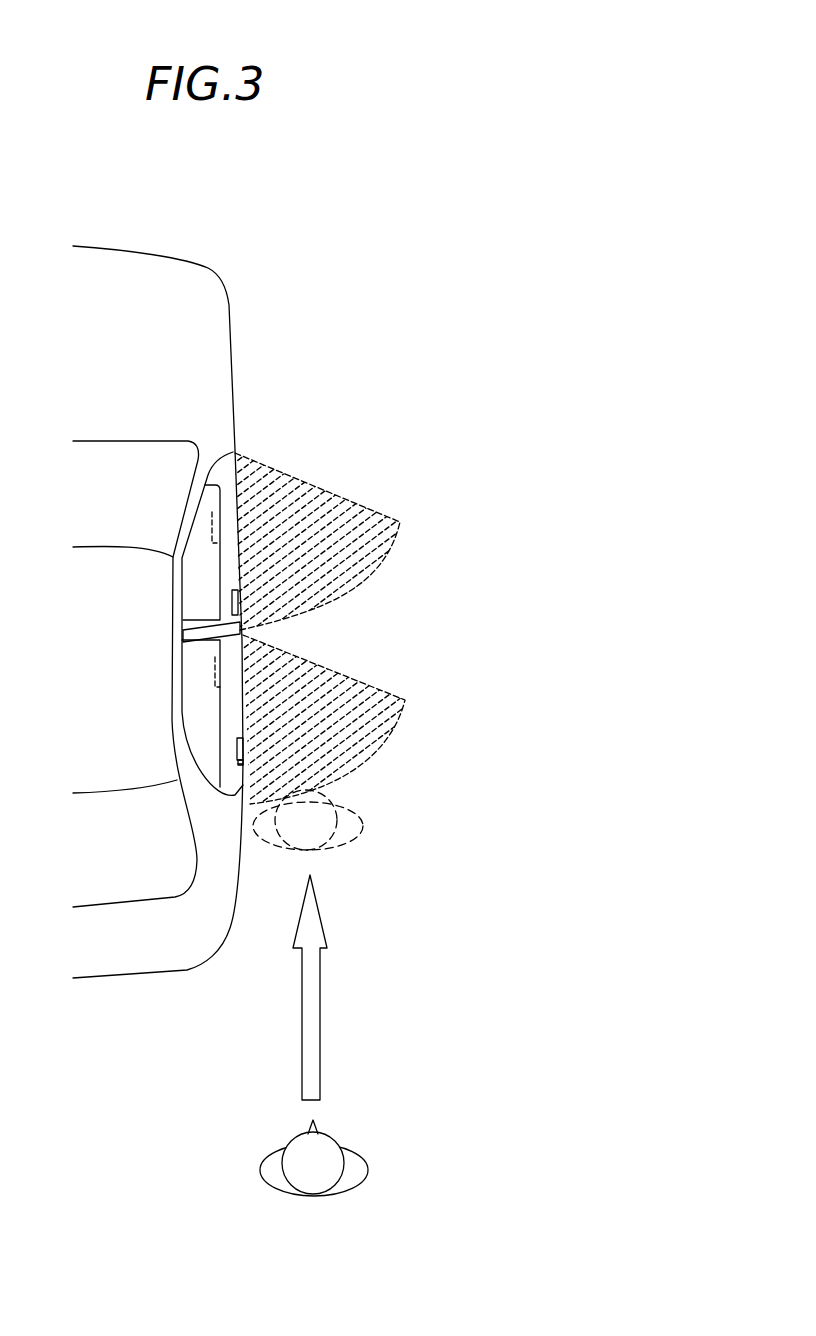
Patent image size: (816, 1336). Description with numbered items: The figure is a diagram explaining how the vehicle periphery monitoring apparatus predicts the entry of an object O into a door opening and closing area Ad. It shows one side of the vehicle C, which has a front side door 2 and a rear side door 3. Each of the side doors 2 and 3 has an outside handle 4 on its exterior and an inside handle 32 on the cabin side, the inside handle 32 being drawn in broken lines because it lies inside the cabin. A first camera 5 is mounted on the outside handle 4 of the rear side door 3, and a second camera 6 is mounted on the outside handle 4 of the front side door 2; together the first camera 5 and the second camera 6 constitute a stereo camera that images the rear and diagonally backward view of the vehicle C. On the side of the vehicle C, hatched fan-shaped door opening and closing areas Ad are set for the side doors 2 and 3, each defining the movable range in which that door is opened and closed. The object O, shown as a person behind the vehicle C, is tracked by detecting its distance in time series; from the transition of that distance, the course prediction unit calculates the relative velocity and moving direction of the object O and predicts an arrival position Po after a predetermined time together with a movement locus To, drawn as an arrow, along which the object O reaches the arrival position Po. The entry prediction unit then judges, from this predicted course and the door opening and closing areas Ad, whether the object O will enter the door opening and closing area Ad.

The vehicle C is at (217, 217).
The front side door 2 is at (230, 558).
The rear side door 3 is at (228, 698).
The outside handle 4 is at (232, 600).
The first camera 5 is at (232, 622).
The second camera 6 is at (240, 765).
The inside handle 32 is at (210, 527).
The door opening and closing area Ad is at (377, 556).
The arrival position Po is at (357, 833).
The movement locus To is at (322, 990).
The object O is at (368, 1173).